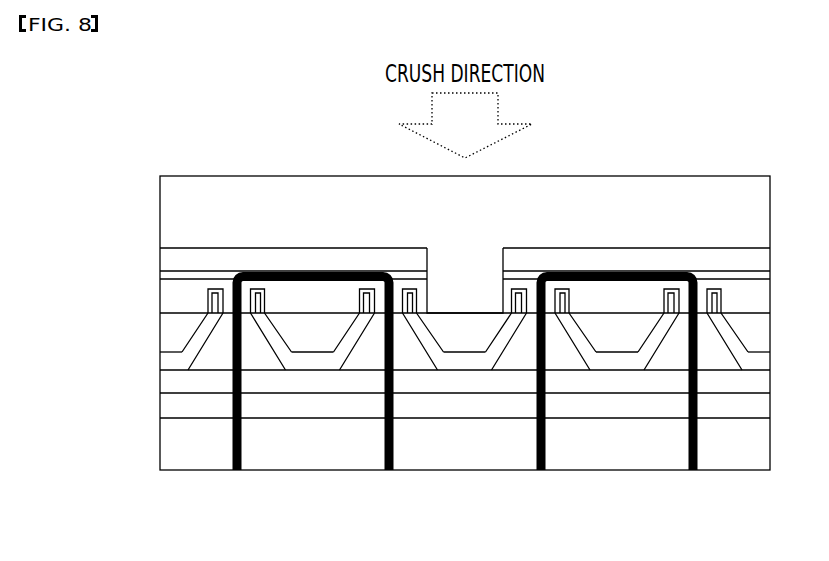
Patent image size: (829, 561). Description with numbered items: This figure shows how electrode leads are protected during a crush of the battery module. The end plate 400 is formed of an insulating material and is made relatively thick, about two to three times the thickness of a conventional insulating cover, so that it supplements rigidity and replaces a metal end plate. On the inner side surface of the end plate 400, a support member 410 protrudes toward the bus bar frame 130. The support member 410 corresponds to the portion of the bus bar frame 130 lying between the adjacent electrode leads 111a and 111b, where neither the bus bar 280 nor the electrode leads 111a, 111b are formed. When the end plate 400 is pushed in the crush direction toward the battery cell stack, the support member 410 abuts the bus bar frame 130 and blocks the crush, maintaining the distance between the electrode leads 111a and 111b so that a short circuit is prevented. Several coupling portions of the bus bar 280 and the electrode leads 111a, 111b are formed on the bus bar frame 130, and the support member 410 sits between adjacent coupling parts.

The electrode lead 111a is at (325, 274).
The electrode lead 111b is at (651, 274).
The bus bar frame 130 is at (463, 371).
The bus bar 280 is at (287, 297).
The end plate 400 is at (735, 203).
The support member 410 is at (470, 283).